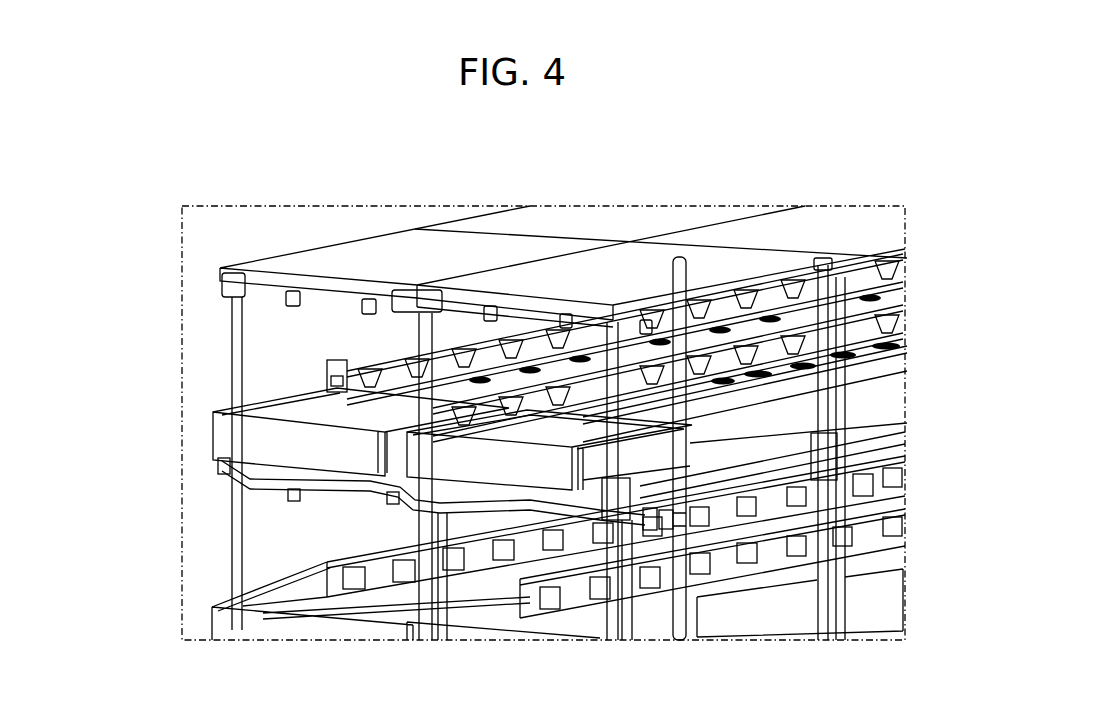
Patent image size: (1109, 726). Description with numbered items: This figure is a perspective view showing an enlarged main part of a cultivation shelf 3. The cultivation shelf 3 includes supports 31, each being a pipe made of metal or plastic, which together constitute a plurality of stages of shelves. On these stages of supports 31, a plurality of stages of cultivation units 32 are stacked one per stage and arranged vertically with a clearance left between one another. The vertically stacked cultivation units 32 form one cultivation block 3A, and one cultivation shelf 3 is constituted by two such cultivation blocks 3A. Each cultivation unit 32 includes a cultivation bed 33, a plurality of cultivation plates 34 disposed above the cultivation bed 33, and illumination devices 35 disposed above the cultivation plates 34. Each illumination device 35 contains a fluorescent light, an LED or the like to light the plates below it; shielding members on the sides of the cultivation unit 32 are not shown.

The cultivation shelf 3 is at (317, 240).
The cultivation block 3A is at (623, 260).
The support 31 is at (413, 343).
The cultivation unit 32 is at (407, 455).
The cultivation bed 33 is at (538, 468).
The cultivation plate 34 is at (712, 372).
The illumination device 35 is at (384, 304).